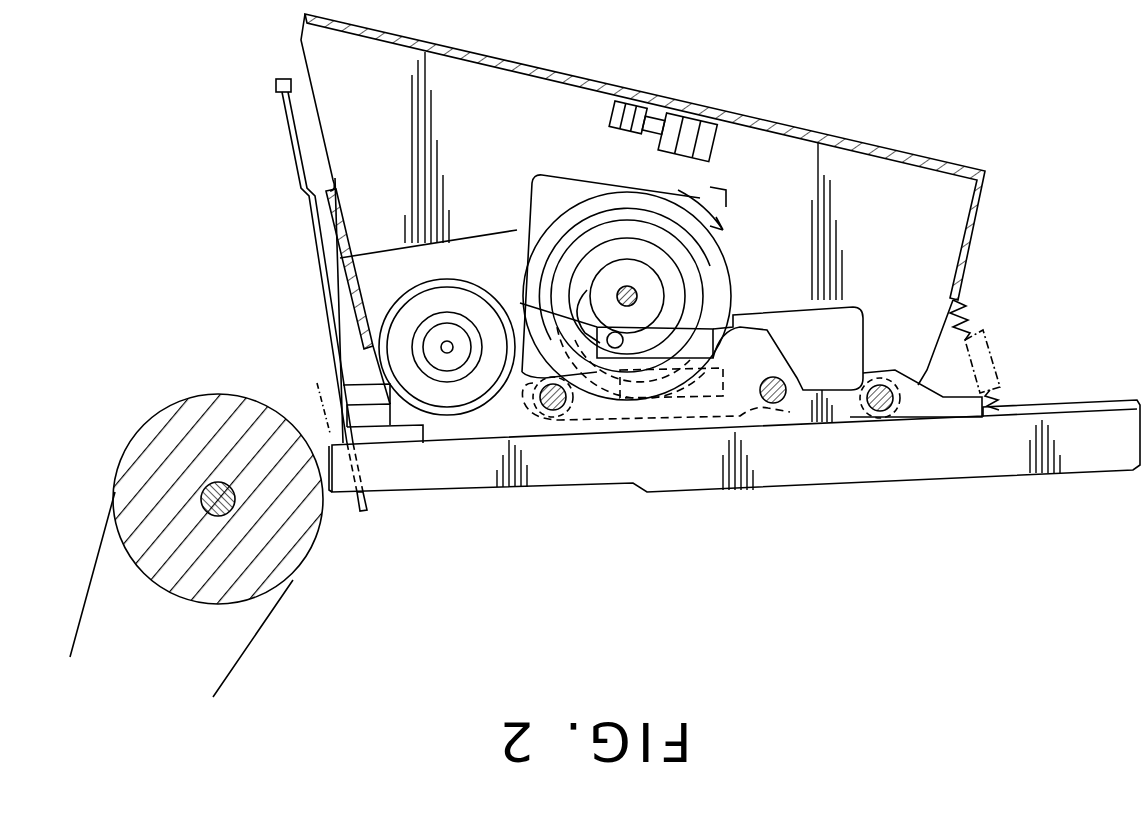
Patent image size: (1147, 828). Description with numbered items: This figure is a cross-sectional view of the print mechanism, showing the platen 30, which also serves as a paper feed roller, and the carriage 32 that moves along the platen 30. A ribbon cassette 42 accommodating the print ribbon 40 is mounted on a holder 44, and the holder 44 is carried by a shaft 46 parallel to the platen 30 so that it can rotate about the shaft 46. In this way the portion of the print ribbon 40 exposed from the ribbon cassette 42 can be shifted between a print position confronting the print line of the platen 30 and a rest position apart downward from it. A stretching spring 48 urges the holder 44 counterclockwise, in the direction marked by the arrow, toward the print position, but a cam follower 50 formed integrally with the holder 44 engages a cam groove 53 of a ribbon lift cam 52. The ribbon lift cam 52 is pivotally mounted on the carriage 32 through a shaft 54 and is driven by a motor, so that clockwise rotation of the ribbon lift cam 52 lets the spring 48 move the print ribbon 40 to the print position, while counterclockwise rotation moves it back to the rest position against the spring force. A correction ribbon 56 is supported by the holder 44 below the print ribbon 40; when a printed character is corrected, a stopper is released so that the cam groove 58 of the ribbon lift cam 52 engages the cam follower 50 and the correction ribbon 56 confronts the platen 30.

The platen 30 is at (168, 567).
The carriage 32 is at (953, 207).
The print ribbon 40 is at (325, 450).
The ribbon cassette 42 is at (905, 470).
The holder 44 is at (820, 392).
The shaft 46 is at (882, 380).
The stretching spring 48 is at (970, 320).
The cam follower 50 is at (530, 306).
The ribbon lift cam 52 is at (726, 263).
The cam groove 53 is at (528, 232).
The shaft 54 is at (627, 288).
The correction ribbon 56 is at (312, 395).
The cam groove 58 is at (613, 220).